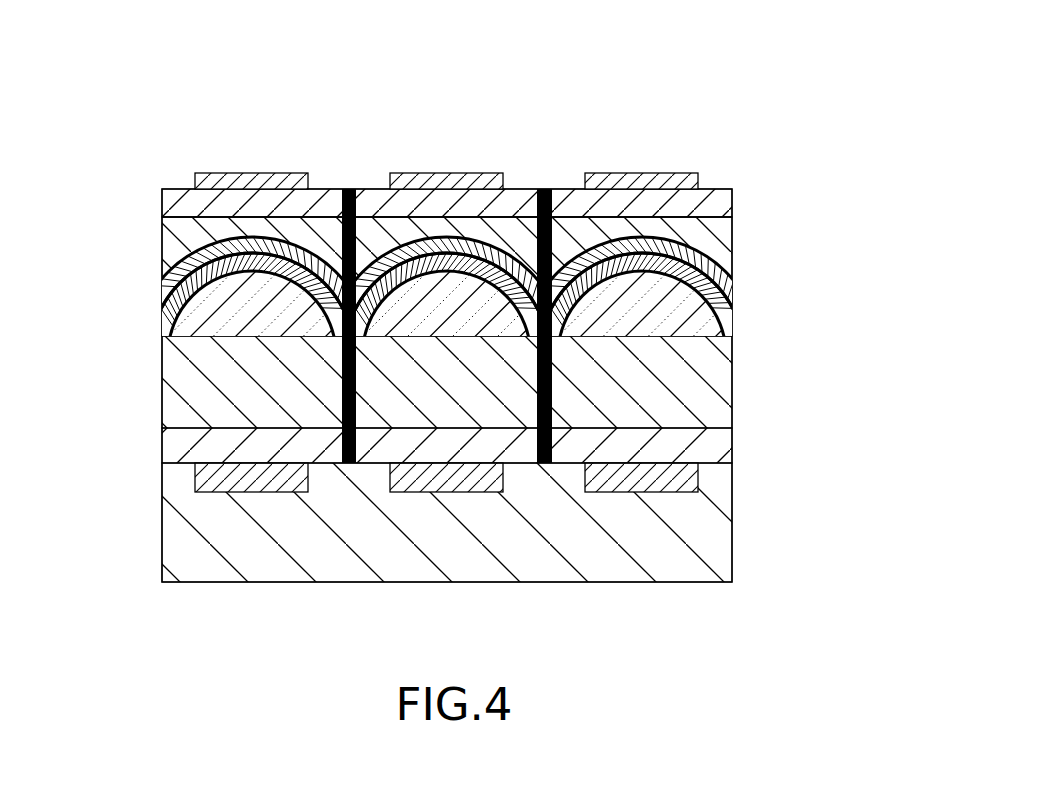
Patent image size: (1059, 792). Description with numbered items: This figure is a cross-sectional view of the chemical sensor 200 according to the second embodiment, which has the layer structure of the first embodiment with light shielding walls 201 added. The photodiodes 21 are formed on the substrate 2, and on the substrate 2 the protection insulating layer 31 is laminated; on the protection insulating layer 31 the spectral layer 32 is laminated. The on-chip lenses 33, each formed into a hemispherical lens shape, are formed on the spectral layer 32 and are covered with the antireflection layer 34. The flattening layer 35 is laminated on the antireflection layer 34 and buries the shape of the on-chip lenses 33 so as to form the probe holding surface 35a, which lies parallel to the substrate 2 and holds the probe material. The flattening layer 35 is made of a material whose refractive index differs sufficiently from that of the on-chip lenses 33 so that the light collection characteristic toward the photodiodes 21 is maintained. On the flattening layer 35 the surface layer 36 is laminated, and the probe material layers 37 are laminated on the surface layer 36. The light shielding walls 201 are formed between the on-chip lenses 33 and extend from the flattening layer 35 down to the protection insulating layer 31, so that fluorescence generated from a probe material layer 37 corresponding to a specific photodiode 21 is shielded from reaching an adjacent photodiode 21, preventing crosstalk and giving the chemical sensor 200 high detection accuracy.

The chemical sensor 200 is at (786, 84).
The substrate 2 is at (720, 539).
The photodiode 21 is at (252, 487).
The protection insulating layer 31 is at (720, 449).
The spectral layer 32 is at (720, 383).
The on-chip lens 33 is at (268, 287).
The antireflection layer 34 is at (737, 283).
The flattening layer 35 is at (720, 238).
The probe holding surface 35a is at (182, 218).
The surface layer 36 is at (720, 199).
The probe material layer 37 is at (243, 181).
The light shielding wall 201 is at (351, 188).